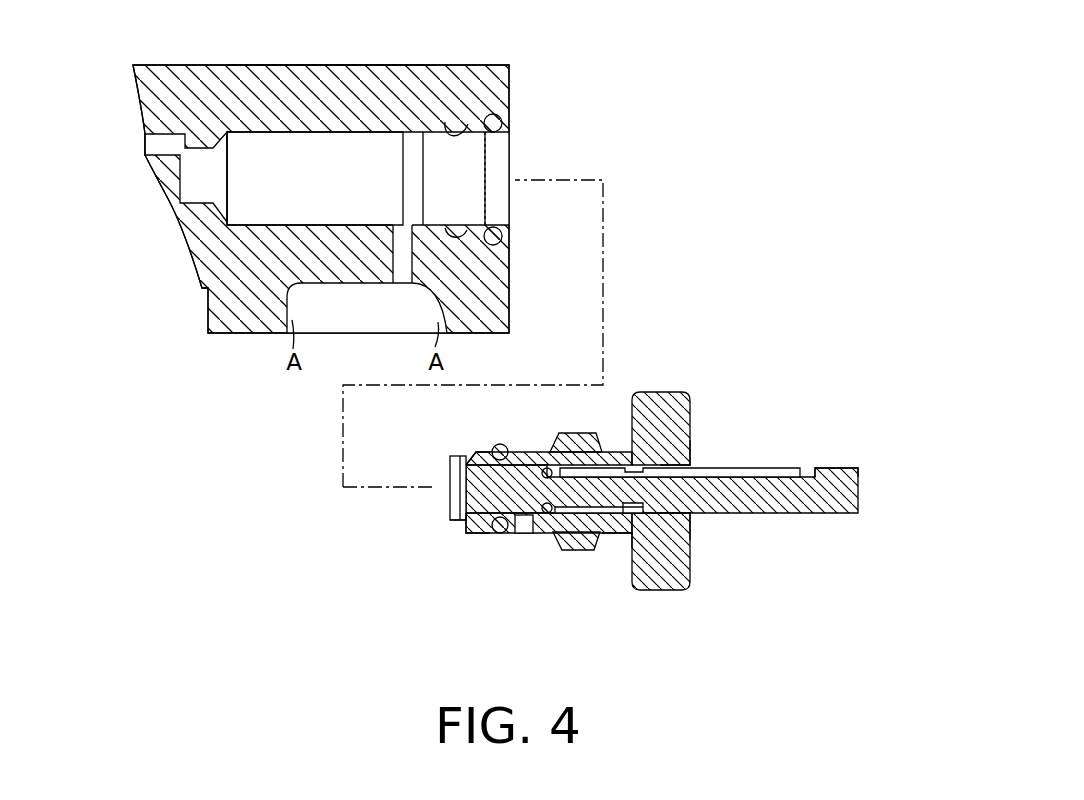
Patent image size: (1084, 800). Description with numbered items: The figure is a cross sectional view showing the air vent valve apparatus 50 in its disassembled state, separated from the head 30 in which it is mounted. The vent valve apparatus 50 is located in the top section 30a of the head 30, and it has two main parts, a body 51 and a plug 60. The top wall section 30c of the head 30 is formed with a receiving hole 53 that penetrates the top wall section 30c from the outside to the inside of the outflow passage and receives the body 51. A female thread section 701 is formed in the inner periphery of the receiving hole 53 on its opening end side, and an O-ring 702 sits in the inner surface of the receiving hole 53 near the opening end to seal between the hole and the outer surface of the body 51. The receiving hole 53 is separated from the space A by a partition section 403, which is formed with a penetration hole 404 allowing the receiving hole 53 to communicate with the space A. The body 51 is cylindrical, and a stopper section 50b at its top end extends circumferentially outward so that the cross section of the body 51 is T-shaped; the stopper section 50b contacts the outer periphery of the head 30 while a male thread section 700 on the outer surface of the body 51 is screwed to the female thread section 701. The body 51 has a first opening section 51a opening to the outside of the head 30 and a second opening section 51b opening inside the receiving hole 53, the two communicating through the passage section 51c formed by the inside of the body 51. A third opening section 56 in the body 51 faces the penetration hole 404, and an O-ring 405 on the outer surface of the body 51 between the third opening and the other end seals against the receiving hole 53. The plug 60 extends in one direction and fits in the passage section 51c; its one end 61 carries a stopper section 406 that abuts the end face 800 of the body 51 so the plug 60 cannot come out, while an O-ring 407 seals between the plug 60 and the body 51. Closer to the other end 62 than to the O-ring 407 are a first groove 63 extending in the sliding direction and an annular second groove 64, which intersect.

The head 30 is at (139, 120).
The top section 30a is at (406, 66).
The top wall section 30c is at (342, 82).
The receiving hole 53 is at (281, 150).
The female thread section 701 is at (467, 122).
The O-ring 702 is at (503, 122).
The partition section 403 is at (340, 273).
The penetration hole 404 is at (395, 273).
The air vent valve apparatus 50 is at (810, 436).
The stopper section 50b is at (657, 392).
The body 51 is at (696, 406).
The first opening section 51a is at (690, 516).
The second opening section 51b is at (469, 516).
The passage section 51c is at (688, 450).
The third opening section 56 is at (527, 533).
The plug 60 is at (852, 520).
The one end 61 is at (482, 492).
The other end 62 is at (860, 483).
The first groove 63 is at (777, 470).
The second groove 64 is at (633, 520).
The O-ring 405 is at (497, 445).
The stopper section 406 is at (452, 522).
The O-ring 407 is at (545, 515).
The male thread section 700 is at (585, 436).
The end face 800 is at (479, 457).